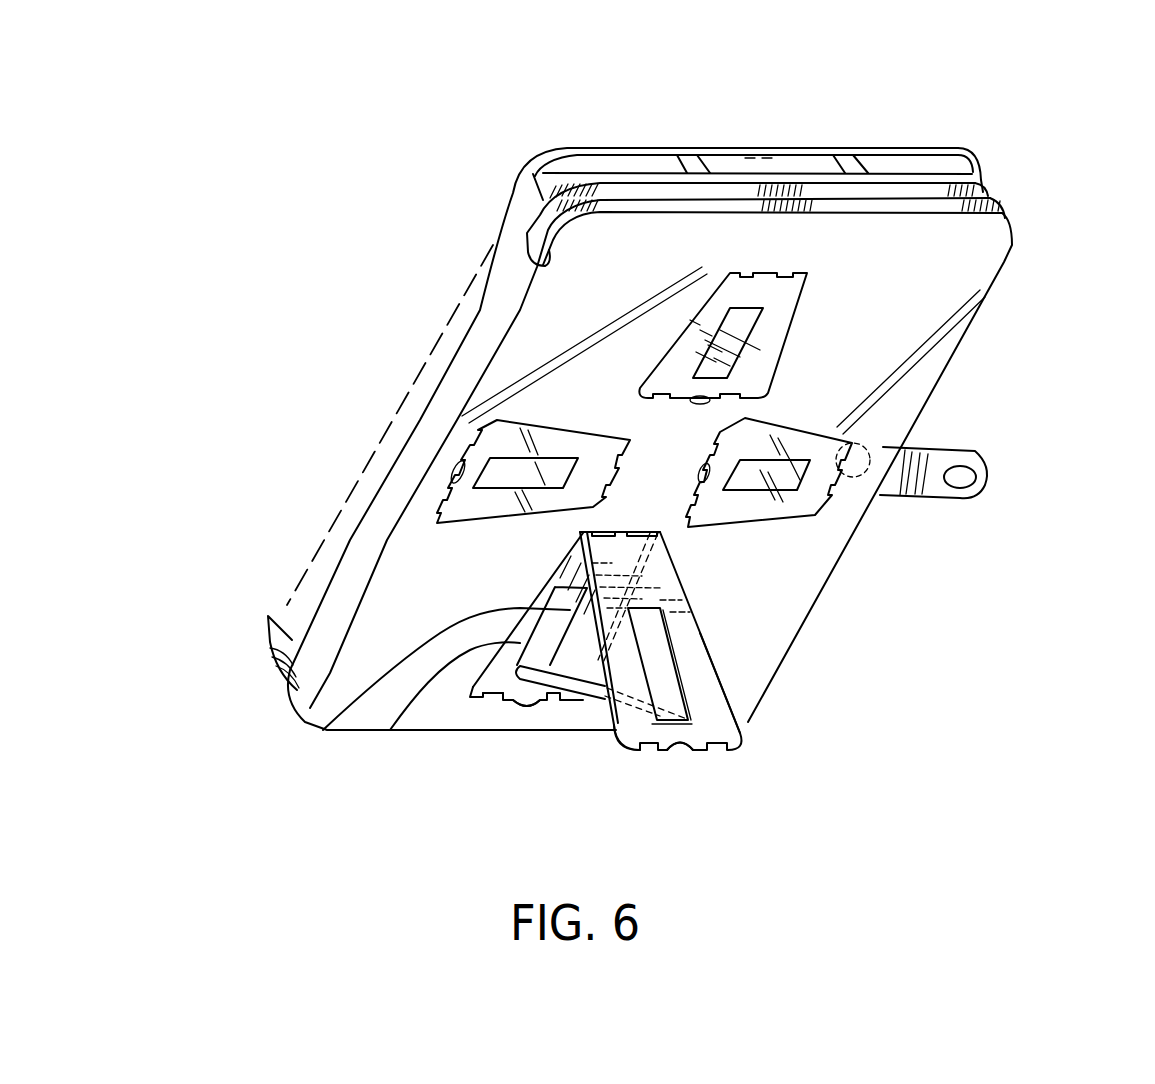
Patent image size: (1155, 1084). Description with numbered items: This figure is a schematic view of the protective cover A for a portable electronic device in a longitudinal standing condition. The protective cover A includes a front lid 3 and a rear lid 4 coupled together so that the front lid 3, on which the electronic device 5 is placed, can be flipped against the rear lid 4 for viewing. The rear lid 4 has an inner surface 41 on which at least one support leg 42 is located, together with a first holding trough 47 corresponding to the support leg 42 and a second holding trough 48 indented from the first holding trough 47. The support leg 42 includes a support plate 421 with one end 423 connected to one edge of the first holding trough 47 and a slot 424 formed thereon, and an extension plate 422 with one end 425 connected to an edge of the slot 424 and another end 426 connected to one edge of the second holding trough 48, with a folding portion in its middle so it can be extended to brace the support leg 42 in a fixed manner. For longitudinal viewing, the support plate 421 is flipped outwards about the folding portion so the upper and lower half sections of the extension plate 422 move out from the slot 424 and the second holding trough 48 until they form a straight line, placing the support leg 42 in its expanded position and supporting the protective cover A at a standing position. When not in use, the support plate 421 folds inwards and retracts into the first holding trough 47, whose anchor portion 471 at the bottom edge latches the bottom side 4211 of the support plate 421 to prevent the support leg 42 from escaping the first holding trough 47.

The front lid 3 is at (847, 148).
The rear lid 4 is at (1002, 264).
The inner surface 41 is at (933, 303).
The support leg 42 is at (724, 669).
The support plate 421 is at (720, 727).
The bottom side 4211 is at (665, 750).
The extension plate 422 is at (557, 701).
The one end of the support plate 423 is at (628, 532).
The slot 424 is at (658, 637).
The one end of the extension plate 425 is at (708, 697).
The another end of the extension plate 426 is at (527, 707).
The first holding trough 47 is at (459, 692).
The anchor portion 471 is at (493, 700).
The second holding trough 48 is at (323, 730).
The electronic device 5 is at (374, 453).
The protective cover A is at (372, 308).